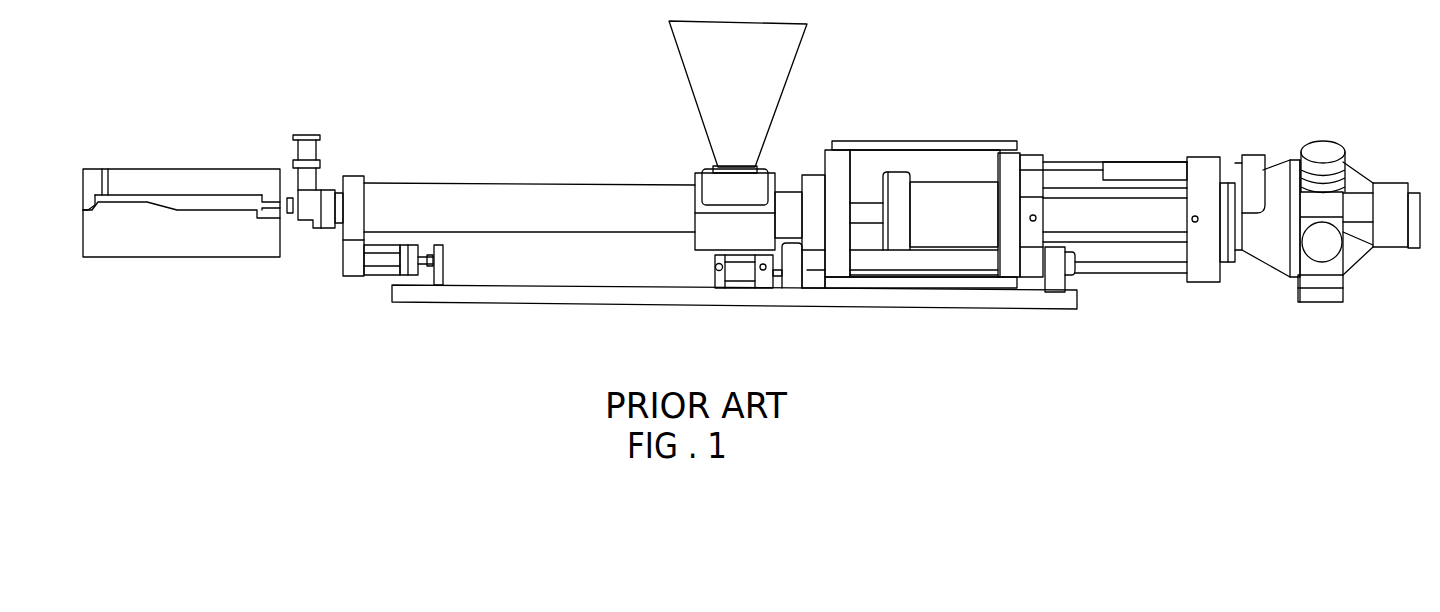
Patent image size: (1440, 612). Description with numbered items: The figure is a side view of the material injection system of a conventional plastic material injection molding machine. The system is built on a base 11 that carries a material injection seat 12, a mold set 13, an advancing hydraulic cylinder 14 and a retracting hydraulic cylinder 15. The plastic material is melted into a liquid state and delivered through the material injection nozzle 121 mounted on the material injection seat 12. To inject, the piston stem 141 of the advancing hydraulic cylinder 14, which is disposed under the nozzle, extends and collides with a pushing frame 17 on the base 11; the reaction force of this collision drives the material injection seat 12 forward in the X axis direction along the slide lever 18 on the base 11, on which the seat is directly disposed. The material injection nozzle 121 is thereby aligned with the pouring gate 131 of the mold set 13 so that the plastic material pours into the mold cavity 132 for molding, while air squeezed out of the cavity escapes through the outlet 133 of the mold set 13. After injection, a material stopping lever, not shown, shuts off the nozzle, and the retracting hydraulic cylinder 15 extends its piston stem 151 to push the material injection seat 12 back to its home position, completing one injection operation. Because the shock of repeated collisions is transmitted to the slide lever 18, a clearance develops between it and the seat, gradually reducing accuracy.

The base 11 is at (675, 293).
The material injection seat 12 is at (1072, 165).
The material injection nozzle 121 is at (288, 212).
The mold set 13 is at (163, 176).
The pouring gate 131 is at (270, 200).
The mold cavity 132 is at (205, 205).
The outlet 133 is at (104, 176).
The advancing hydraulic cylinder 14 is at (378, 264).
The piston stem 141 is at (432, 258).
The retracting hydraulic cylinder 15 is at (737, 290).
The piston stem 151 is at (787, 290).
The pushing frame 17 is at (441, 262).
The slide lever 18 is at (1030, 268).